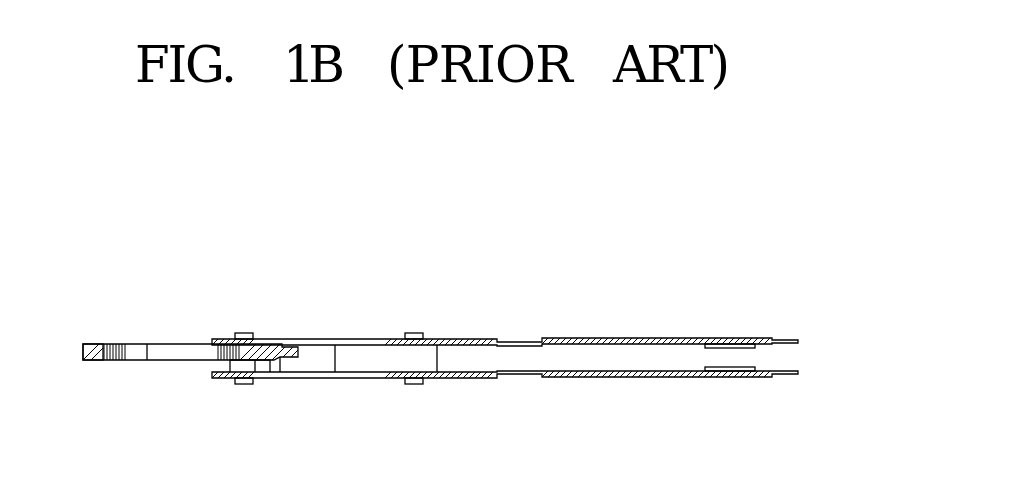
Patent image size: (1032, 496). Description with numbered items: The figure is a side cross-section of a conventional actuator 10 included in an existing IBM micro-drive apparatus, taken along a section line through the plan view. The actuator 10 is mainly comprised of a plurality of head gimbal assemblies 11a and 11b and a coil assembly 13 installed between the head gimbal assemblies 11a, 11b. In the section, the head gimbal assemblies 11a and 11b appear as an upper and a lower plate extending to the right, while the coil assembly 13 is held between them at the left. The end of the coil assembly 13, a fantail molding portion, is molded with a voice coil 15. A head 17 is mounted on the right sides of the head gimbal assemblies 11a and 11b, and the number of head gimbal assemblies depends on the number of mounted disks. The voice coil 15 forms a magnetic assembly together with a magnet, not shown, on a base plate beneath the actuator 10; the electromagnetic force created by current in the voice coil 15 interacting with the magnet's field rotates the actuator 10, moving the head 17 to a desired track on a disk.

The conventional actuator 10 is at (477, 321).
The head gimbal assembly 11a is at (400, 339).
The head gimbal assembly 11b is at (395, 378).
The coil assembly 13 is at (92, 344).
The voice coil 15 is at (222, 346).
The head 17 is at (783, 357).